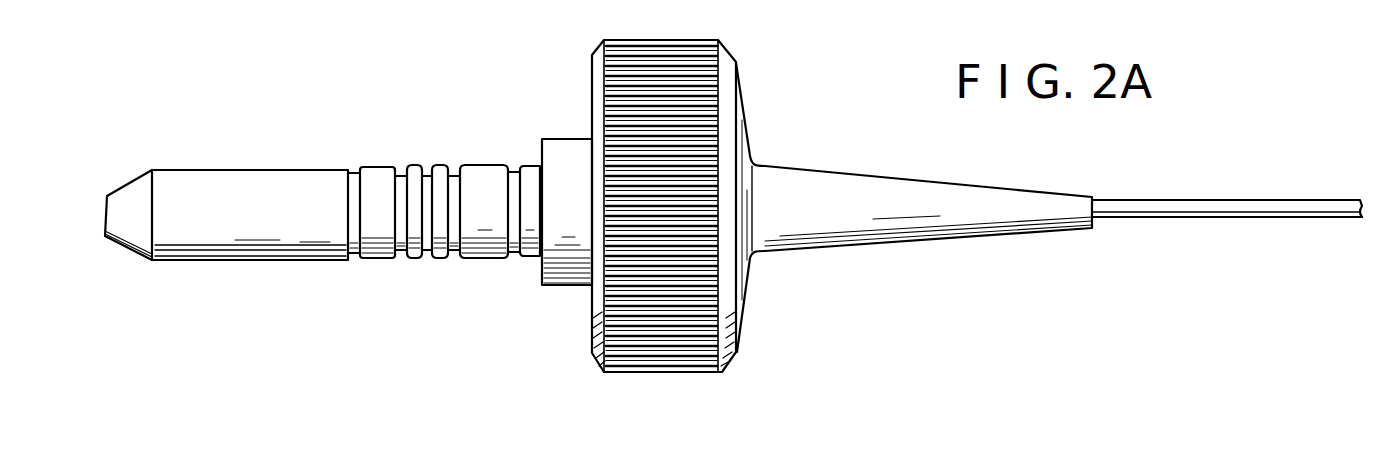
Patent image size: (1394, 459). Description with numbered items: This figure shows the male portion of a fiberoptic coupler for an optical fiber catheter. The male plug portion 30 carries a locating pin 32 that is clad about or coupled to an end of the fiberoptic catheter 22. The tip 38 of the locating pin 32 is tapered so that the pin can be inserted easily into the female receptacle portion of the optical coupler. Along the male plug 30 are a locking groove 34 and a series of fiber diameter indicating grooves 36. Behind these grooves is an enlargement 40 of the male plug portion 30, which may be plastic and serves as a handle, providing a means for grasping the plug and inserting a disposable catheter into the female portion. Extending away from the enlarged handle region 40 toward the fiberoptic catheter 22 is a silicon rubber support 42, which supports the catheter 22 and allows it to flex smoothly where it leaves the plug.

The fiberoptic catheter 22 is at (1242, 218).
The male plug portion 30 is at (760, 347).
The locating pin 32 is at (270, 257).
The locking groove 34 is at (513, 260).
The fiber diameter indicating grooves 36 is at (457, 258).
The tip 38 is at (140, 254).
The enlargement 40 is at (693, 373).
The silicon rubber support 42 is at (953, 232).